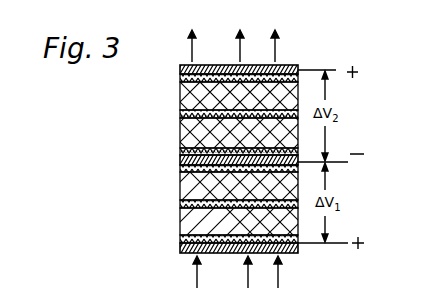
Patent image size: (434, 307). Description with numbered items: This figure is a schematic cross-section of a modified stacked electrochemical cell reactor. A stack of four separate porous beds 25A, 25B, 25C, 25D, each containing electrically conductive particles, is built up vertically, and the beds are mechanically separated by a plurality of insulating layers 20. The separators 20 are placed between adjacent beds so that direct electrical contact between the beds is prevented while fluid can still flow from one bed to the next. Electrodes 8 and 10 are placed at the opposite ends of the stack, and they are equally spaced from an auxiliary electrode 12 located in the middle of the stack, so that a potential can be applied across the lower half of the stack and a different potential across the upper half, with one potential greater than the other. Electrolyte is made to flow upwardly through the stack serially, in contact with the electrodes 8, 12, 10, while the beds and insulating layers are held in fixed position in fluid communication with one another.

The electrode 8 is at (298, 253).
The electrode 10 is at (297, 67).
The auxiliary electrode 12 is at (300, 161).
The insulating layer 20 is at (179, 151).
The porous bed 25A is at (239, 221).
The porous bed 25B is at (239, 186).
The porous bed 25C is at (239, 133).
The porous bed 25D is at (239, 96).